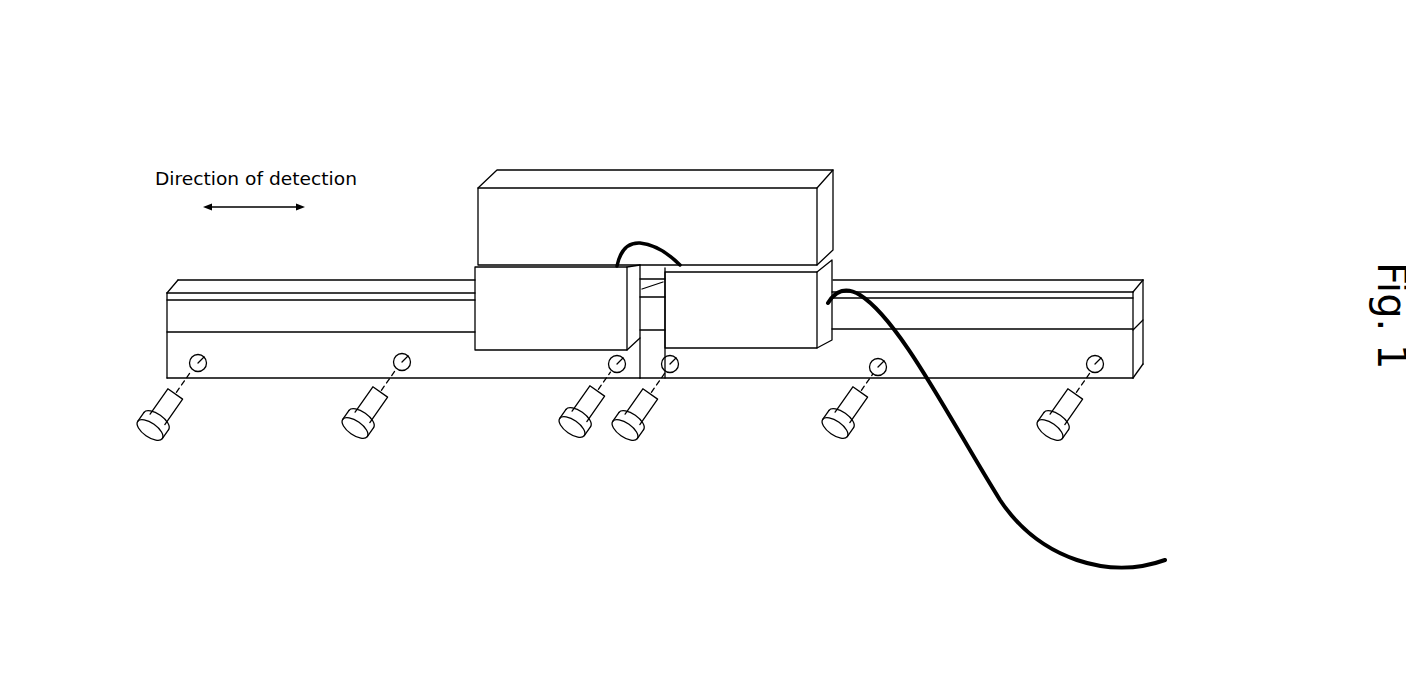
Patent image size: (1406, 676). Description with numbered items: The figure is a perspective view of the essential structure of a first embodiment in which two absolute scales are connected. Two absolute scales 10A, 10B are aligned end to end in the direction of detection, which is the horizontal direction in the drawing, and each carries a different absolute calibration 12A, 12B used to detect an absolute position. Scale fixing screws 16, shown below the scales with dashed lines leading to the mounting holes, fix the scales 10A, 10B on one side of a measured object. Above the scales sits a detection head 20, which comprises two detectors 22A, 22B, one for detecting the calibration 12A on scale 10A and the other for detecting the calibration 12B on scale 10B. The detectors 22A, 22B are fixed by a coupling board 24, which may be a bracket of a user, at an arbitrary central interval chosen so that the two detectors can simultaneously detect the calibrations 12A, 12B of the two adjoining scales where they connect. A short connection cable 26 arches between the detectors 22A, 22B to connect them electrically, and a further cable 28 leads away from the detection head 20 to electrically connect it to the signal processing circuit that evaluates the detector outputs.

The absolute scale 10A is at (356, 305).
The absolute scale 10B is at (925, 304).
The absolute calibration 12A is at (190, 317).
The absolute calibration 12B is at (1110, 313).
The scale fixing screw 16 is at (1067, 417).
The detection head 20 is at (672, 229).
The detector 22A is at (492, 352).
The detector 22B is at (728, 352).
The coupling board 24 is at (835, 177).
The connection cable 26 is at (651, 243).
The cable 28 is at (1005, 510).